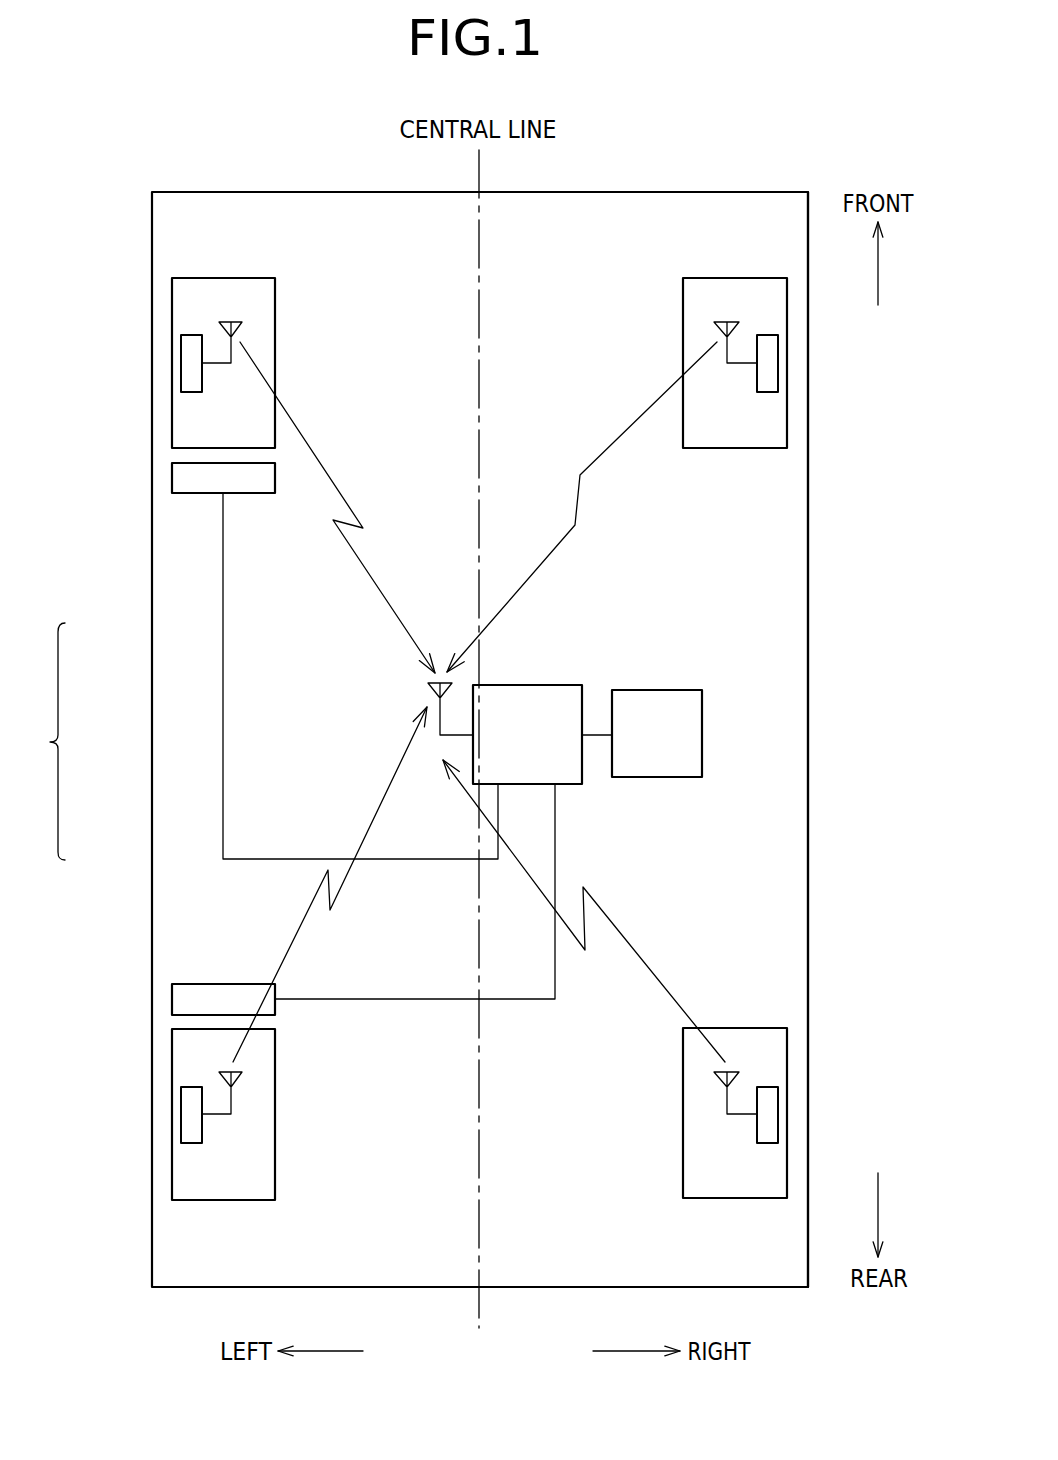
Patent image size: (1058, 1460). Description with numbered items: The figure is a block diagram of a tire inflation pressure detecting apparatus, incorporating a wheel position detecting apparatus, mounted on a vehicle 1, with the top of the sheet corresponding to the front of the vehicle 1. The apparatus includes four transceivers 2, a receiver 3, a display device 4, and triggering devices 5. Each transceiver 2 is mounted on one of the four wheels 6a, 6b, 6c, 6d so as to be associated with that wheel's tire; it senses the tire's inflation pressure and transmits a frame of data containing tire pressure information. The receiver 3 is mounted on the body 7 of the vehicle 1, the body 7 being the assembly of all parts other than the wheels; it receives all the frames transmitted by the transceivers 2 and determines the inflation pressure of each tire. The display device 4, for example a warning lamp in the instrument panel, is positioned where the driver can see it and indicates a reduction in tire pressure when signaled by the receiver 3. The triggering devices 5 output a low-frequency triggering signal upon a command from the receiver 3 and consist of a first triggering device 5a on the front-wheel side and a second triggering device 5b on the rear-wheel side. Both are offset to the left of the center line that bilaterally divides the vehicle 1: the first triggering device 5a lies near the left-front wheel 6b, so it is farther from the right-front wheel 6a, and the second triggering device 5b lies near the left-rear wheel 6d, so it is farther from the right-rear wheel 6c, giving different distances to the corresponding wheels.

The vehicle 1 is at (636, 190).
The transceiver 2 is at (181, 367).
The receiver 3 is at (533, 685).
The display device 4 is at (660, 690).
The triggering device 5 is at (46, 741).
The first triggering device 5a is at (172, 478).
The second triggering device 5b is at (172, 999).
The right-front wheel 6a is at (737, 278).
The left-front wheel 6b is at (218, 278).
The right-rear wheel 6c is at (735, 1198).
The left-rear wheel 6d is at (222, 1200).
The body 7 is at (808, 638).